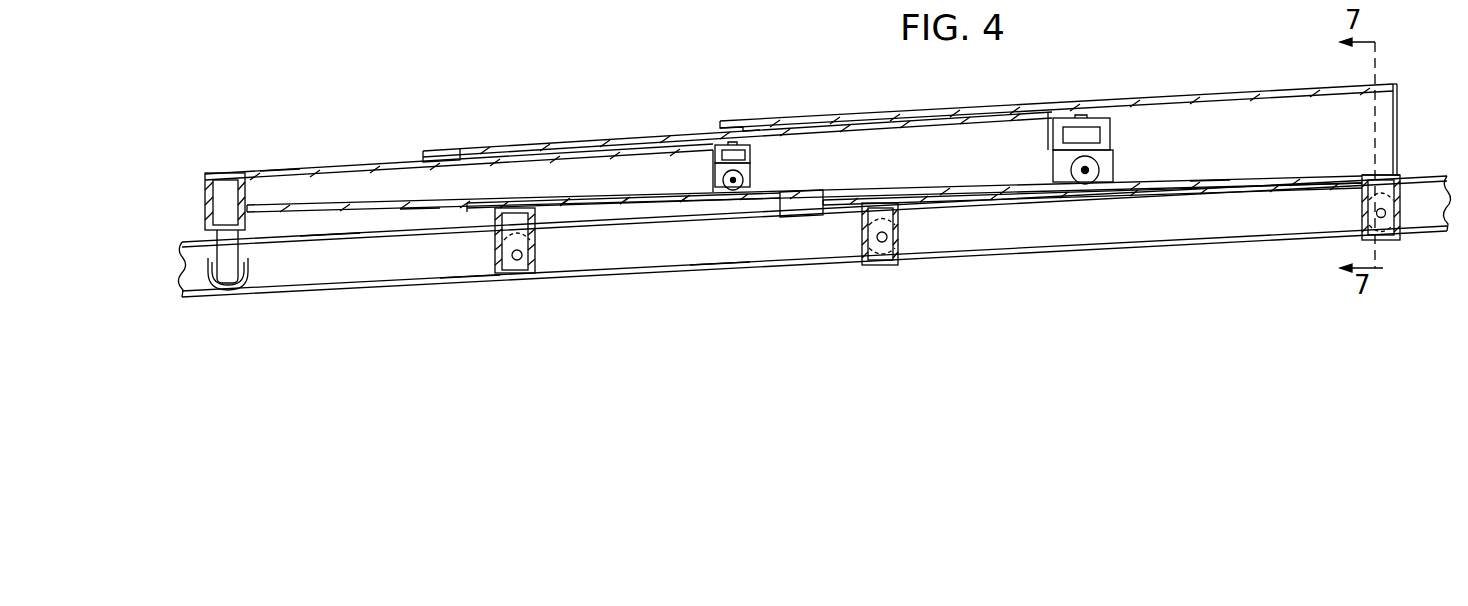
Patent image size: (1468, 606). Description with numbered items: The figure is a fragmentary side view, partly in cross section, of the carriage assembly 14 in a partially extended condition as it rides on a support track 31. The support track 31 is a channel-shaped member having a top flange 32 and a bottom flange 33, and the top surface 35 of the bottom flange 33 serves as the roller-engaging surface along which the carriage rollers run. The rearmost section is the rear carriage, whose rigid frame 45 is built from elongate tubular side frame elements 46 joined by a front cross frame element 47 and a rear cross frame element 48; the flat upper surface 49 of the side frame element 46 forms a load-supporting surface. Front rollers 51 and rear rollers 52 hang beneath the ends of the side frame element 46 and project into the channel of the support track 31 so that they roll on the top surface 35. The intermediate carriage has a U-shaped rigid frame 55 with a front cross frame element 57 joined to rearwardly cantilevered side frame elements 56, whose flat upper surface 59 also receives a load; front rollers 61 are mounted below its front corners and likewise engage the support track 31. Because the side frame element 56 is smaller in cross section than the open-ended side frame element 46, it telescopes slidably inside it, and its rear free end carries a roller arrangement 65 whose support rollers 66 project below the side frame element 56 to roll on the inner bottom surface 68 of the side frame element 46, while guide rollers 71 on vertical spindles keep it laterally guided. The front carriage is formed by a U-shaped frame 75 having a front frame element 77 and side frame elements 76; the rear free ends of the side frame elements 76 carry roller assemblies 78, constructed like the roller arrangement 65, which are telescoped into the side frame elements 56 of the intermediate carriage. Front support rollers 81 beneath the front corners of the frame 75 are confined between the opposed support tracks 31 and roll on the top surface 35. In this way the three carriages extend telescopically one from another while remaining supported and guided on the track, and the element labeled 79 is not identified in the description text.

The carriage assembly 14 is at (718, 78).
The support track 31 is at (655, 262).
The top flange 32 is at (330, 248).
The bottom flange 33 is at (470, 276).
The top surface 35 is at (718, 265).
The rigid frame 45 is at (1230, 96).
The side frame element 46 is at (1142, 192).
The front cross frame element 47 is at (900, 212).
The rear cross frame element 48 is at (1362, 205).
The upper surface 49 is at (1162, 98).
The front roller 51 is at (900, 252).
The rear roller 52 is at (1400, 245).
The rigid frame 55 is at (548, 142).
The side frame element 56 is at (777, 196).
The front cross frame element 57 is at (540, 238).
The upper surface 59 is at (622, 140).
The front roller 61 is at (540, 255).
The roller arrangement 65 is at (1102, 142).
The support roller 66 is at (1088, 186).
The inner bottom surface 68 is at (1210, 172).
The guide roller 71 is at (1075, 132).
The U-shaped frame 75 is at (283, 172).
The side frame element 76 is at (420, 212).
The front frame element 77 is at (207, 200).
The roller assembly 78 is at (757, 158).
The first telescoping rail 79 is at (357, 170).
The front support roller 81 is at (240, 282).